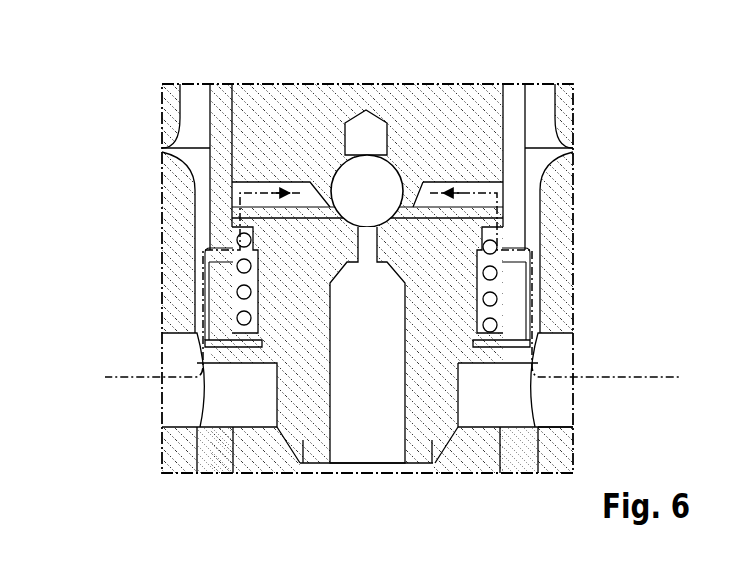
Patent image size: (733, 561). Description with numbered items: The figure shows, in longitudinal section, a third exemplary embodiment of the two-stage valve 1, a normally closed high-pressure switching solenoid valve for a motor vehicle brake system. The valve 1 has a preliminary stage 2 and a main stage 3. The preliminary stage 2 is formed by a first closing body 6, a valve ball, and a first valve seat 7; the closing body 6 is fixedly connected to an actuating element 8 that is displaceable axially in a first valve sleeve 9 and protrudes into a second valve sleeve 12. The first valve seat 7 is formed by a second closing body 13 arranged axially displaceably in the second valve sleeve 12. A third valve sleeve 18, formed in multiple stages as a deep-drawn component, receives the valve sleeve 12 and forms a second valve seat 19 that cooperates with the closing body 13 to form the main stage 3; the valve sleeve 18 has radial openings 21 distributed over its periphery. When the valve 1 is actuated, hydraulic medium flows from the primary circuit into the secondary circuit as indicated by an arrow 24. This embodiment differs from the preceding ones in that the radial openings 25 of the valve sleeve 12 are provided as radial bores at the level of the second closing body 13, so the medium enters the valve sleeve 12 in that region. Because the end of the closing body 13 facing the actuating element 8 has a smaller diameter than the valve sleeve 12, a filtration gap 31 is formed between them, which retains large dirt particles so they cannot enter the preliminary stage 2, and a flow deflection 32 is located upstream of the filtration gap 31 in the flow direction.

The valve 1 is at (101, 82).
The preliminary stage 2 is at (318, 168).
The main stage 3 is at (273, 460).
The first closing body 6 is at (362, 172).
The first valve seat 7 is at (405, 243).
The actuating element 8 is at (448, 140).
The first valve sleeve 9 is at (565, 103).
The second valve sleeve 12 is at (510, 136).
The second closing body 13 is at (443, 352).
The third valve sleeve 18 is at (510, 462).
The second valve seat 19 is at (445, 457).
The radial openings 21 is at (185, 402).
The arrow 24 is at (103, 377).
The radial openings 25 is at (510, 303).
The filtration gap 31 is at (230, 216).
The flow deflection 32 is at (477, 240).